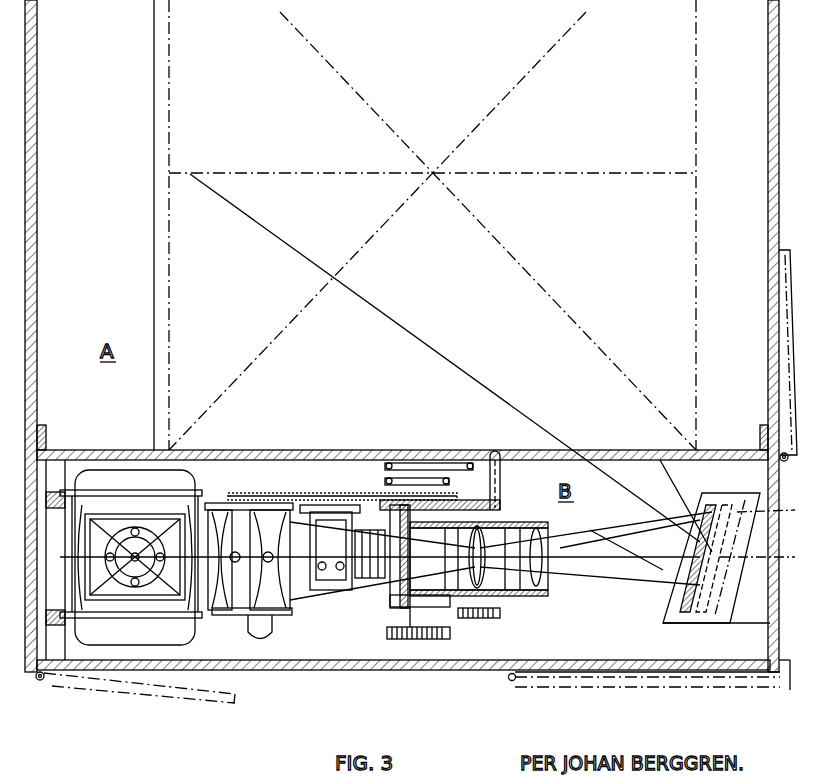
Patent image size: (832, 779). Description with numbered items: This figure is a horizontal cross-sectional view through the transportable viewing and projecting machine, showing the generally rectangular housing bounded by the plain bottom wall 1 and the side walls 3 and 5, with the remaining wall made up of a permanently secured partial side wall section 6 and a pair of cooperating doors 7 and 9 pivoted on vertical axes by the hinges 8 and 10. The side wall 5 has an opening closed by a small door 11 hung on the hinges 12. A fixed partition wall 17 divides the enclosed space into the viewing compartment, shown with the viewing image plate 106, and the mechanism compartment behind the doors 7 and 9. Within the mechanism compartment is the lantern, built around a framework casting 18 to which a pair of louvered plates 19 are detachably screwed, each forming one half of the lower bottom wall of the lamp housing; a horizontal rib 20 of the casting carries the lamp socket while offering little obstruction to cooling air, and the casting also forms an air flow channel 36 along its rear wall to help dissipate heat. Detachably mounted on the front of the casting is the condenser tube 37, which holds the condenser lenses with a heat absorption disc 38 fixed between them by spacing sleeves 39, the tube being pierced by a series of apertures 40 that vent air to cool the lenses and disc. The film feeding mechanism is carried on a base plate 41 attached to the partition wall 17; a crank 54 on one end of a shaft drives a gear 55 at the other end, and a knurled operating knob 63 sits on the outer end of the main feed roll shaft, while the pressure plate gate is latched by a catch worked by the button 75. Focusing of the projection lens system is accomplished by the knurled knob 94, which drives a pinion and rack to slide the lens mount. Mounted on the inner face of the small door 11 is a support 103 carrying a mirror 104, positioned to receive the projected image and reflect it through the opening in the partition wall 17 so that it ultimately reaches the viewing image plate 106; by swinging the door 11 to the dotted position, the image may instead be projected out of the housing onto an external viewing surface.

The bottom wall 1 is at (652, 676).
The side wall 3 is at (40, 215).
The side wall 5 is at (768, 138).
The partial side wall section 6 is at (592, 673).
The door 7 is at (400, 671).
The hinge 8 is at (510, 680).
The door 9 is at (185, 671).
The hinge 10 is at (42, 680).
The small door 11 is at (786, 690).
The hinge 12 is at (780, 460).
The partition wall 17 is at (372, 456).
The framework casting 18 is at (75, 625).
The louvered plate 19 is at (200, 483).
The horizontal rib 20 is at (130, 505).
The air flow channel 36 is at (60, 488).
The tube 37 is at (290, 610).
The heat absorption disc 38 is at (276, 493).
The spacing sleeve 39 is at (243, 503).
The aperture 40 is at (235, 552).
The base plate 41 is at (490, 503).
The crank 54 is at (272, 636).
The gear 55 is at (372, 490).
The knurled operating knob 63 is at (390, 638).
The button 75 is at (378, 603).
The knurled knob 94 is at (488, 618).
The support 103 is at (745, 617).
The mirror 104 is at (690, 600).
The viewing image plate 106 is at (458, 256).